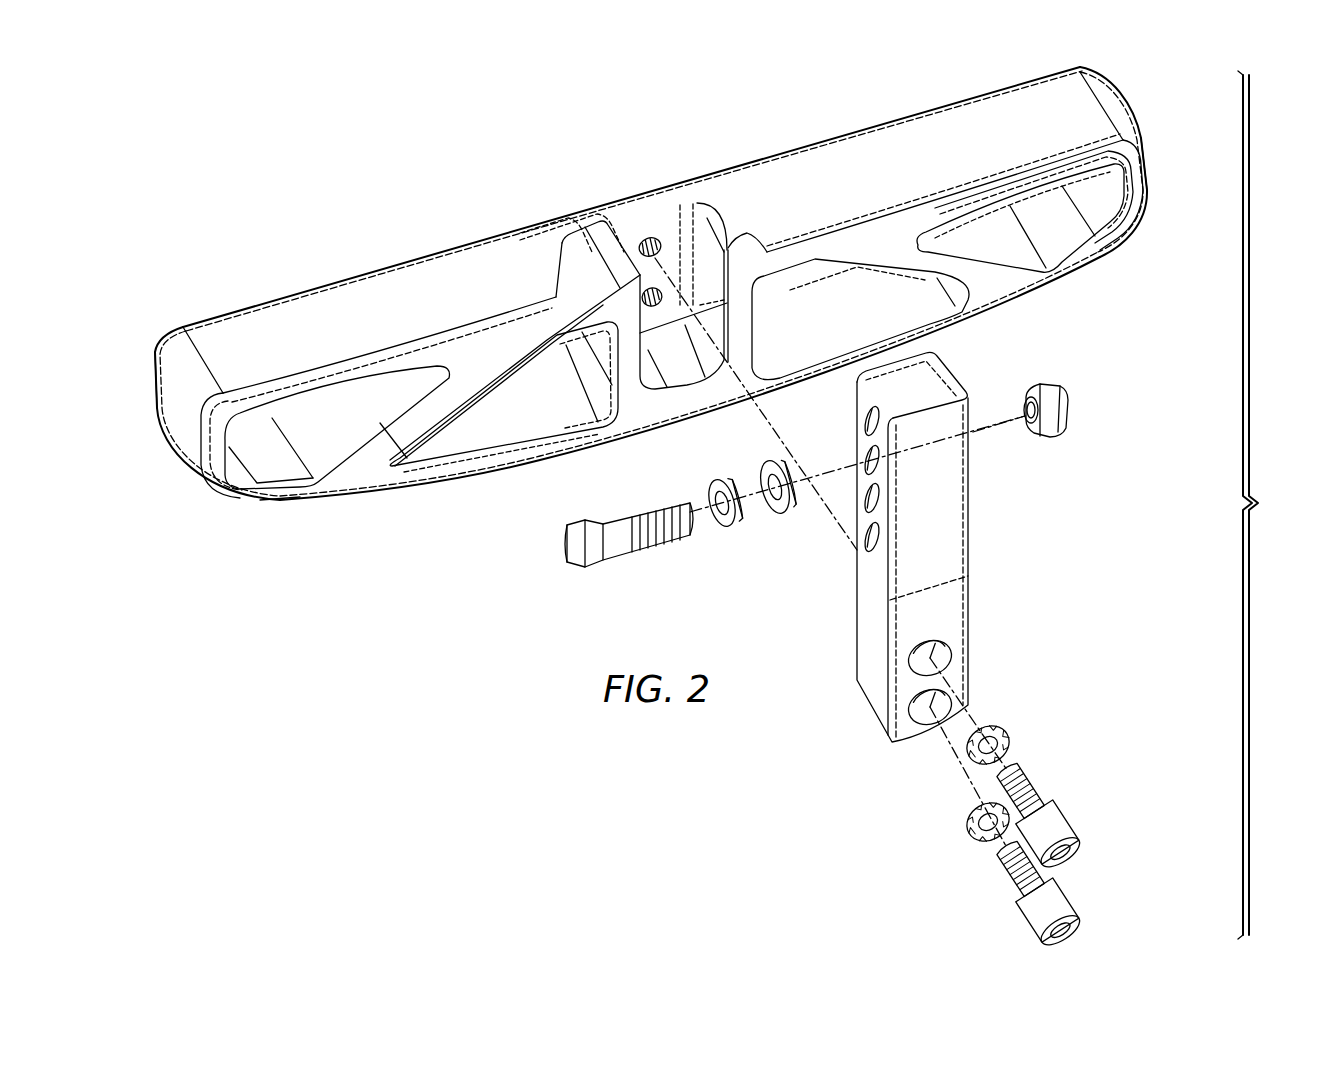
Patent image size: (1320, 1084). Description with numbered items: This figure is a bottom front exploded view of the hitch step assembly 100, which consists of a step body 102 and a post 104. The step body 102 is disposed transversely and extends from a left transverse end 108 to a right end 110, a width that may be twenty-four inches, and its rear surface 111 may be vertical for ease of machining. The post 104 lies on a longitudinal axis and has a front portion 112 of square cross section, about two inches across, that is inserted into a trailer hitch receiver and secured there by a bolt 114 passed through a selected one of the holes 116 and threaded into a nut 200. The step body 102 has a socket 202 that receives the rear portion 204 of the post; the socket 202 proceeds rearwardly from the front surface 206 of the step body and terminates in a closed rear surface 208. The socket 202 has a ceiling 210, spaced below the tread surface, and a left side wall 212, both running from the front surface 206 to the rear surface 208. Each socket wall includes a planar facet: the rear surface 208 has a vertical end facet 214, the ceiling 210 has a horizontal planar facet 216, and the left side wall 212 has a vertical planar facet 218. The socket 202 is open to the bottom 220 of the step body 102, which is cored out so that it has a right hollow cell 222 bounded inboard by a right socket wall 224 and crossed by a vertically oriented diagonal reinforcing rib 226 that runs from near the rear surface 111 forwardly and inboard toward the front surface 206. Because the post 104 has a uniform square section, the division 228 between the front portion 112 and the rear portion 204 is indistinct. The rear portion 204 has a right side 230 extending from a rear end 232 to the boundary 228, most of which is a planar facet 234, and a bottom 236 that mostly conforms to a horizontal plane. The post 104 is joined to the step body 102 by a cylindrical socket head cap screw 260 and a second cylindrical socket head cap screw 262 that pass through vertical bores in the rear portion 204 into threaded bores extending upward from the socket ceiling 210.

The hitch step assembly 100 is at (1268, 505).
The step body 102 is at (372, 270).
The post 104 is at (971, 515).
The left transverse end 108 is at (1150, 171).
The right end 110 is at (177, 422).
The rear surface 111 is at (283, 501).
The front portion 112 is at (950, 457).
The bolt 114 is at (640, 543).
The holes 116 is at (866, 460).
The nut 200 is at (1067, 402).
The socket 202 is at (672, 226).
The rear portion 204 is at (935, 740).
The front surface 206 is at (480, 267).
The rear surface 208 is at (675, 358).
The ceiling 210 is at (636, 230).
The left side wall 212 is at (707, 227).
The end facet 214 is at (680, 375).
The planar facet 216 is at (670, 303).
The planar facet 218 is at (712, 276).
The bottom 220 is at (652, 413).
The right hollow cell 222 is at (537, 408).
The right socket wall 224 is at (630, 367).
The diagonal reinforcing rib 226 is at (413, 423).
The division 228 is at (935, 592).
The right side 230 is at (867, 662).
The rear end 232 is at (918, 743).
The planar facet 234 is at (868, 680).
The bottom 236 is at (903, 730).
The cylindrical socket head cap screw 260 is at (1070, 827).
The cylindrical socket head cap screw 262 is at (1070, 903).